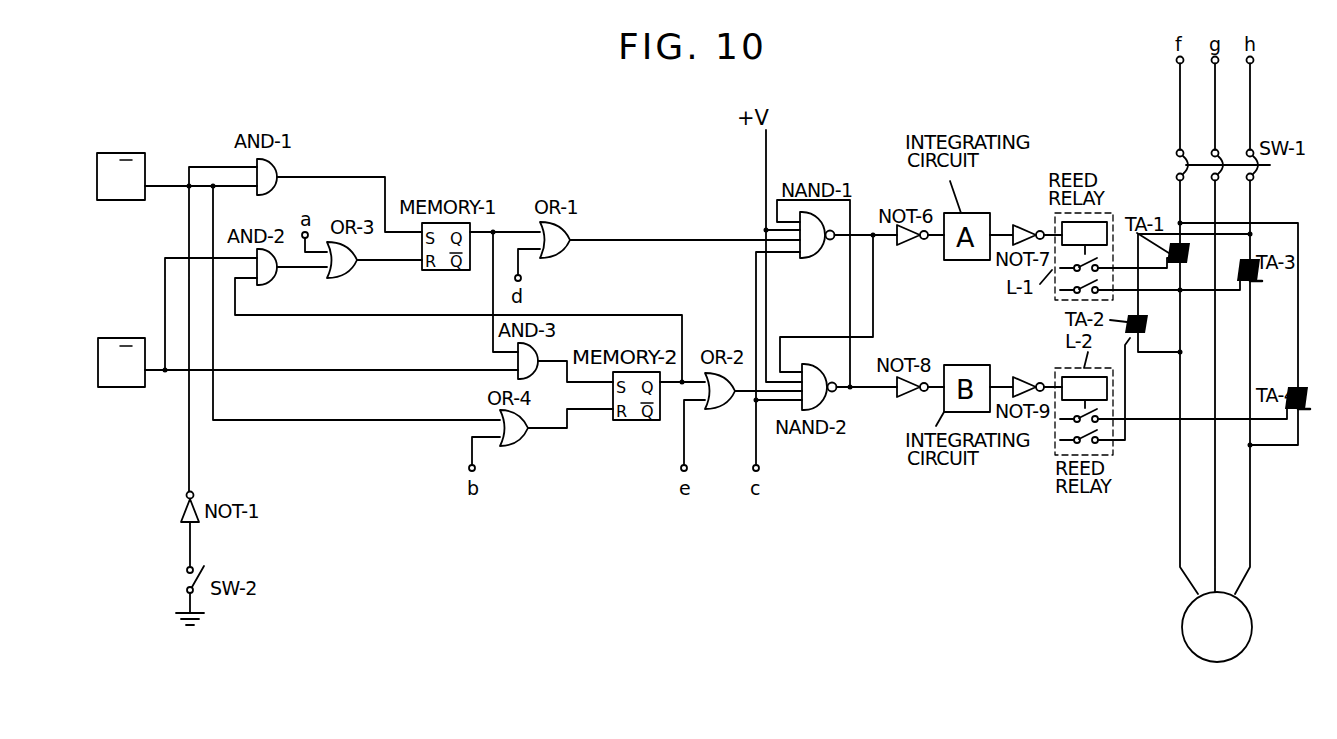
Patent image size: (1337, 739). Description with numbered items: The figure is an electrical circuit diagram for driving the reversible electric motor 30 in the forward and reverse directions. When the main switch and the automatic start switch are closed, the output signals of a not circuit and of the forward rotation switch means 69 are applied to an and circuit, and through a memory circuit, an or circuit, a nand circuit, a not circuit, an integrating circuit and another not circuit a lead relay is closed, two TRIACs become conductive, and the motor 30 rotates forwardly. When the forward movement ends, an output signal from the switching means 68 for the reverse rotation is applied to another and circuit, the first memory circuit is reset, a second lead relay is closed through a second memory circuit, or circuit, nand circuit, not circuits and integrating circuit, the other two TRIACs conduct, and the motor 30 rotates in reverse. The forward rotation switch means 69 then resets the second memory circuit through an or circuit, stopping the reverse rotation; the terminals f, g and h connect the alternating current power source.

The forward rotation switch means 69 is at (123, 200).
The switching means for the reverse rotation 68 is at (118, 338).
The reversible electric motor 30 is at (1246, 621).